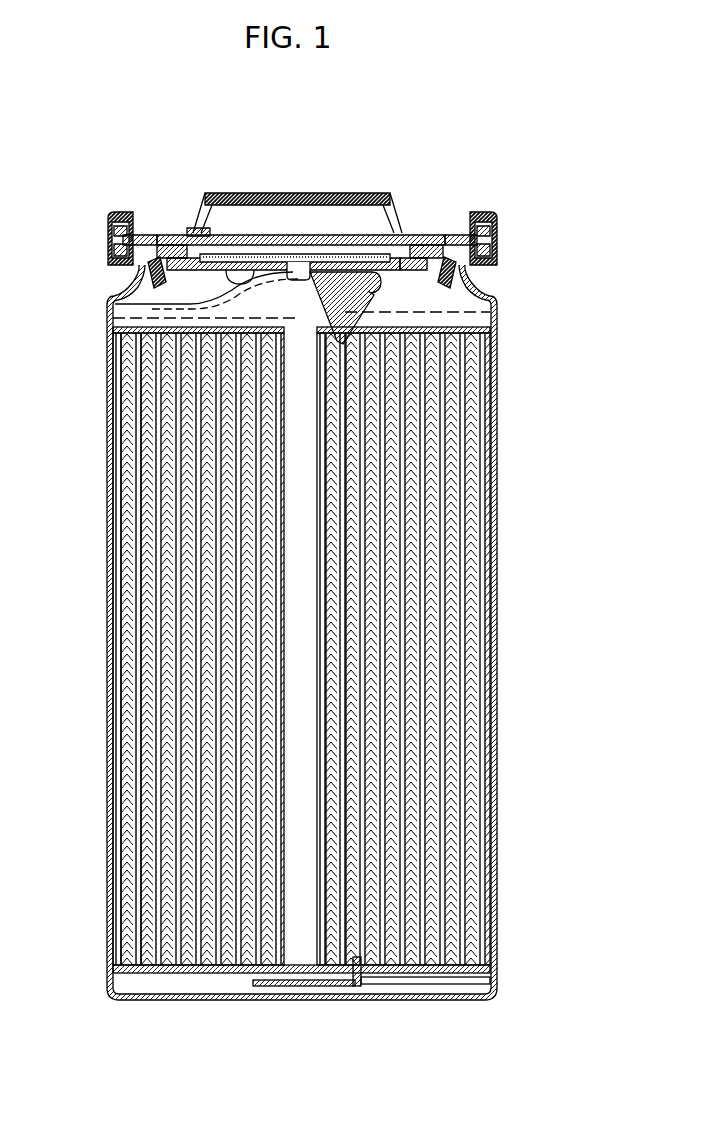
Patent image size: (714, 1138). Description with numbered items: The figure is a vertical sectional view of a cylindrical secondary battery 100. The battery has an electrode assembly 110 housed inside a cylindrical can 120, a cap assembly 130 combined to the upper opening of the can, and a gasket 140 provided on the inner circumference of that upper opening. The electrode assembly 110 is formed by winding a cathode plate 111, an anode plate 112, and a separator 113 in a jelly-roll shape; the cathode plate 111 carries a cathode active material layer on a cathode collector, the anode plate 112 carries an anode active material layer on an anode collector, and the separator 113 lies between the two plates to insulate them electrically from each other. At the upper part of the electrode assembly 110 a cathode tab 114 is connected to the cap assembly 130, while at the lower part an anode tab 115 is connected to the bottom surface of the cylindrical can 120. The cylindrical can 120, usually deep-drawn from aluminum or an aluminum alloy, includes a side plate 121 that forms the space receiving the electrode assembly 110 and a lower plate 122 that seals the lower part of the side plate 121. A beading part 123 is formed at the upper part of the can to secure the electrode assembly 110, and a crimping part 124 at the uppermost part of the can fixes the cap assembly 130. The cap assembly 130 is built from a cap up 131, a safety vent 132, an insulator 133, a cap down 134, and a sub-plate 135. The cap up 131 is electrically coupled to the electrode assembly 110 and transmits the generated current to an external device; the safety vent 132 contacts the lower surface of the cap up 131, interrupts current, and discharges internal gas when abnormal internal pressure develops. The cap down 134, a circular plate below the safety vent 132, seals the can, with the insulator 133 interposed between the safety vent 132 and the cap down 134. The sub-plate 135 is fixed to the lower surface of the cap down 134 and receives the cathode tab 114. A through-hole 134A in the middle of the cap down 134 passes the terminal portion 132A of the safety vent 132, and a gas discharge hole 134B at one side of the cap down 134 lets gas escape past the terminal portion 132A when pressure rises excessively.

The secondary battery 100 is at (83, 131).
The electrode assembly 110 is at (560, 360).
The cathode plate 111 is at (490, 372).
The anode plate 112 is at (478, 428).
The separator 113 is at (482, 397).
The cathode tab 114 is at (497, 318).
The anode tab 115 is at (352, 1000).
The cylindrical can 120 is at (497, 518).
The side plate 121 is at (498, 823).
The lower plate 122 is at (402, 1000).
The beading part 123 is at (118, 283).
The crimping part 124 is at (108, 217).
The cap assembly 130 is at (412, 138).
The cap up 131 is at (340, 193).
The safety vent 132 is at (399, 232).
The terminal portion 132A is at (125, 300).
The insulator 133 is at (423, 232).
The cap down 134 is at (270, 256).
The through-hole 134A is at (125, 317).
The gas discharge hole 134B is at (200, 228).
The sub-plate 135 is at (233, 270).
The gasket 140 is at (503, 258).